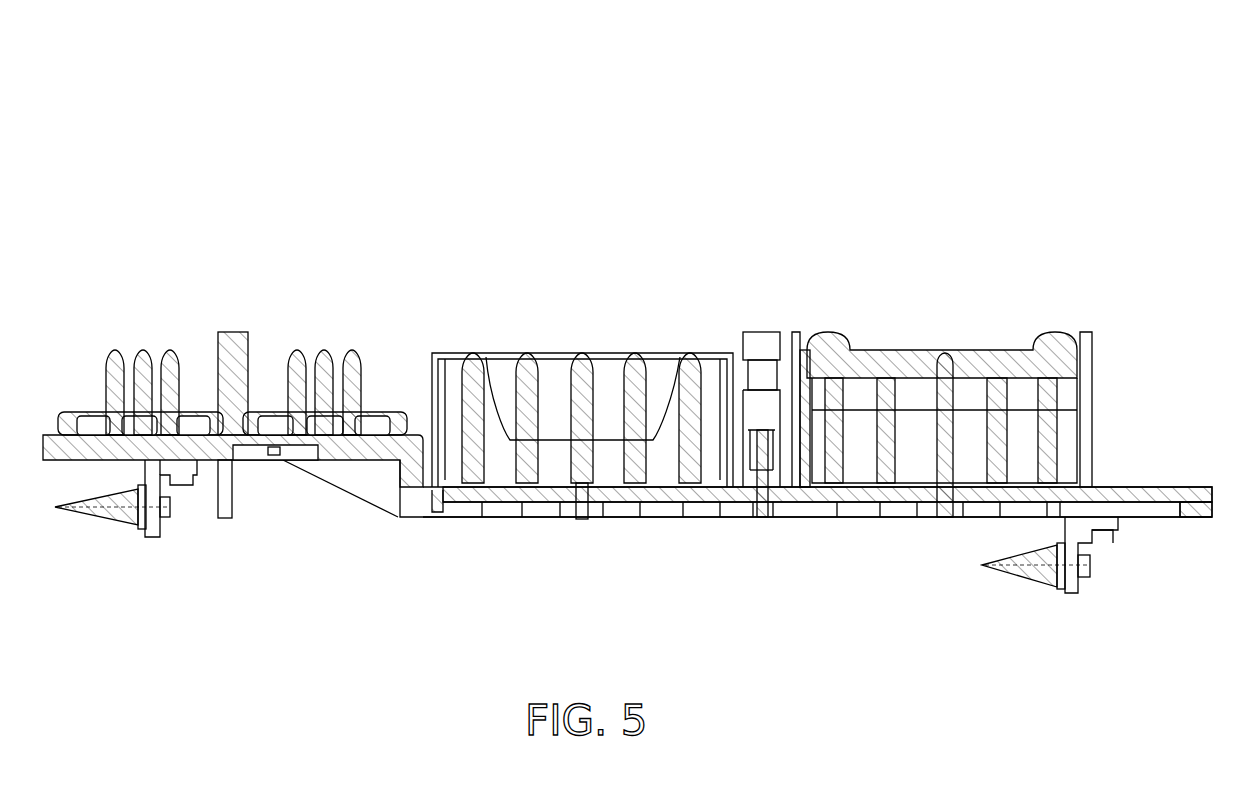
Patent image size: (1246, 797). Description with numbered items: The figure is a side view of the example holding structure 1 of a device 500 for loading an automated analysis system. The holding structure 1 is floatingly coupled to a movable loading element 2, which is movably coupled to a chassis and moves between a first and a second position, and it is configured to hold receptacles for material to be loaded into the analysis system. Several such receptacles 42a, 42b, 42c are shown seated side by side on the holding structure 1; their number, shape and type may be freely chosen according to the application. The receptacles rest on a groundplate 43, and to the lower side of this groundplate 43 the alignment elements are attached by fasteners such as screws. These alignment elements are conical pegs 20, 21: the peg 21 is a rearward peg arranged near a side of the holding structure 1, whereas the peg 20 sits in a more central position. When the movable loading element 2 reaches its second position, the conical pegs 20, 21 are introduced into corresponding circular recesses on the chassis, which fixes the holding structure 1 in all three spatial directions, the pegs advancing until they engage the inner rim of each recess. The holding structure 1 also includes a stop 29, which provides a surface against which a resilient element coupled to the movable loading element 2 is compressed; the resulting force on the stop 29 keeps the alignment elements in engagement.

The connector assembly 500 is at (705, 100).
The holding structure 1 is at (402, 340).
The movable loading element 2 is at (744, 421).
The conical peg 20 is at (123, 520).
The conical peg 21 is at (1032, 565).
The stop 29 is at (227, 492).
The receptacle 42a is at (68, 418).
The receptacle 42b is at (462, 357).
The receptacle 42c is at (830, 347).
The groundplate 43 is at (1127, 497).